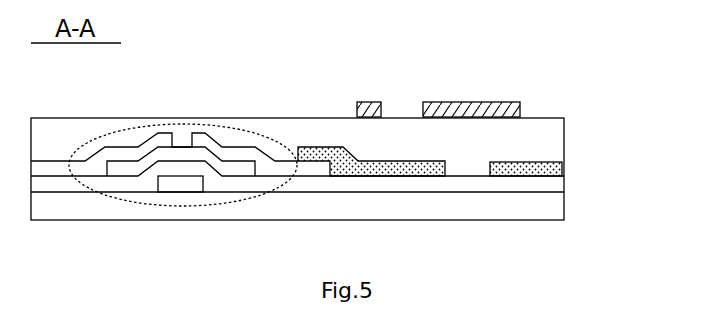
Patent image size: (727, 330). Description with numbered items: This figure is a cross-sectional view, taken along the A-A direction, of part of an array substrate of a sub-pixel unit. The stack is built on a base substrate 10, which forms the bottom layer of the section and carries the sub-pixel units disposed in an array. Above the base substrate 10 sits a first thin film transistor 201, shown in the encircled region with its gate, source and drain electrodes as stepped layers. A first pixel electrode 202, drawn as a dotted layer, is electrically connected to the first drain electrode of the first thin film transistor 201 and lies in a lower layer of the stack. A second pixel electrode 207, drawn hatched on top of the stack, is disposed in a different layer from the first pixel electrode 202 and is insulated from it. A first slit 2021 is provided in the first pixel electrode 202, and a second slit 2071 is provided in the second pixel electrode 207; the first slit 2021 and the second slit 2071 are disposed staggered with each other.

The base substrate 10 is at (540, 207).
The first thin film transistor 201 is at (157, 118).
The first slit 2021 is at (465, 168).
The first pixel electrode 202 is at (540, 170).
The second pixel electrode 207 is at (520, 112).
The second slit 2071 is at (405, 103).